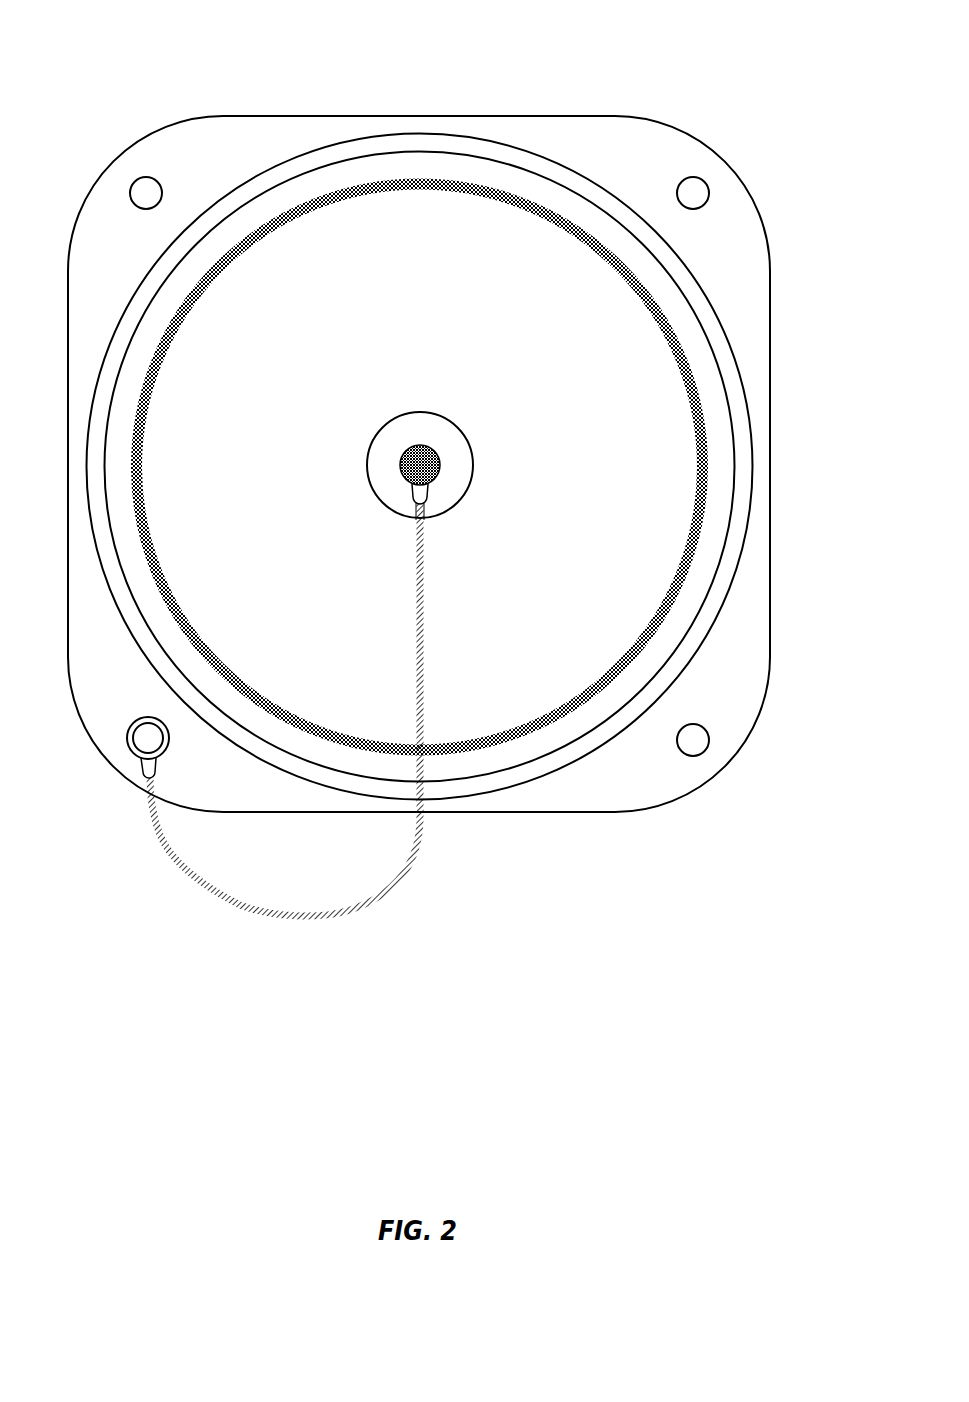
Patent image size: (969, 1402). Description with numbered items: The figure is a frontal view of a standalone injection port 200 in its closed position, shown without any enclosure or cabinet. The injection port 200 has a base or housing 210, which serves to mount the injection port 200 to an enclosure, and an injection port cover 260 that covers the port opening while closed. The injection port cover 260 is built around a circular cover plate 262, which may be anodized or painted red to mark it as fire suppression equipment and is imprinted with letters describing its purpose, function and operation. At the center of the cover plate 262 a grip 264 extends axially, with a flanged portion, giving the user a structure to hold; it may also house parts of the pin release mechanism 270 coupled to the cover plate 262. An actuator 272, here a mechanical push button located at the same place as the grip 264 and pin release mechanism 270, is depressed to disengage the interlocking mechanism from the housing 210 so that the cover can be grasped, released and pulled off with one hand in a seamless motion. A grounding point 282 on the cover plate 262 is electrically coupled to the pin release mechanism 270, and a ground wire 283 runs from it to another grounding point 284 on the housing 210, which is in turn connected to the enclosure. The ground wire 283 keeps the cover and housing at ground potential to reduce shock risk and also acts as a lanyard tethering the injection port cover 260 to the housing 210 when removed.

The injection port 200 is at (721, 96).
The housing 210 is at (745, 256).
The injection port cover 260 is at (543, 691).
The cover plate 262 is at (475, 715).
The grip 264 is at (447, 493).
The pin release mechanism 270 is at (442, 458).
The actuator 272 is at (407, 483).
The grounding point 282 is at (423, 497).
The ground wire 283 is at (387, 890).
The grounding point 284 is at (145, 767).